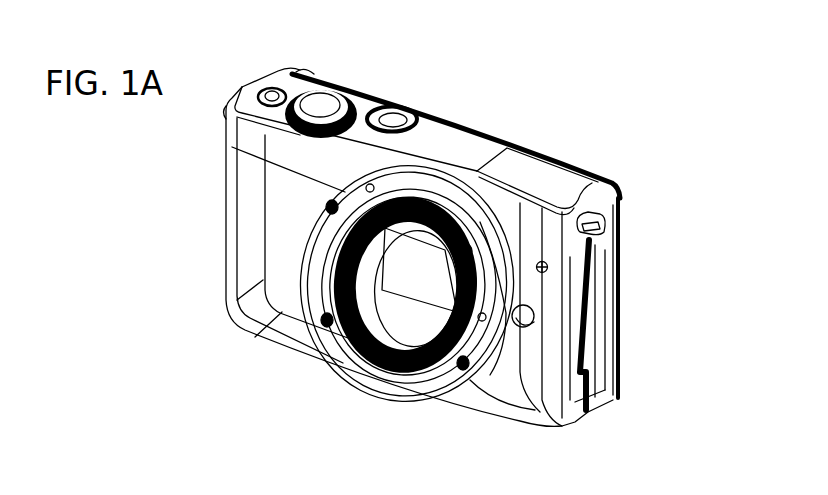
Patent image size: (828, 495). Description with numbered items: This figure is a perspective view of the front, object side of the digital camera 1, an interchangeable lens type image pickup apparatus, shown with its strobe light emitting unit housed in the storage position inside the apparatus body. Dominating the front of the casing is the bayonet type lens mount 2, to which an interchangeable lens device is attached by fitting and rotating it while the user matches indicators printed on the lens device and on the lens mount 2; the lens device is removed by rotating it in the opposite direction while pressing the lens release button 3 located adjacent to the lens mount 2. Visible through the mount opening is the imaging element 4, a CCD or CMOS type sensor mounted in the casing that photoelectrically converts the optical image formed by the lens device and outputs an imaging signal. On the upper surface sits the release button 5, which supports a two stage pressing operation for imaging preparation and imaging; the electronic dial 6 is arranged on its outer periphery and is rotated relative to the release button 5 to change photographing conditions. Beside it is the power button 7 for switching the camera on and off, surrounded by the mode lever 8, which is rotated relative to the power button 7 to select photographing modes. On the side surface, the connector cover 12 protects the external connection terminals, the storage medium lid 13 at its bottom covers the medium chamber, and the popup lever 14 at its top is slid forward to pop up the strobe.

The digital camera 1 is at (226, 206).
The lens mount 2 is at (347, 343).
The lens release button 3 is at (540, 333).
The imaging element 4 is at (400, 267).
The release button 5 is at (323, 103).
The electronic dial 6 is at (300, 77).
The power button 7 is at (395, 115).
The mode lever 8 is at (408, 114).
The connector cover 12 is at (600, 288).
The storage medium lid 13 is at (598, 342).
The popup lever 14 is at (606, 240).